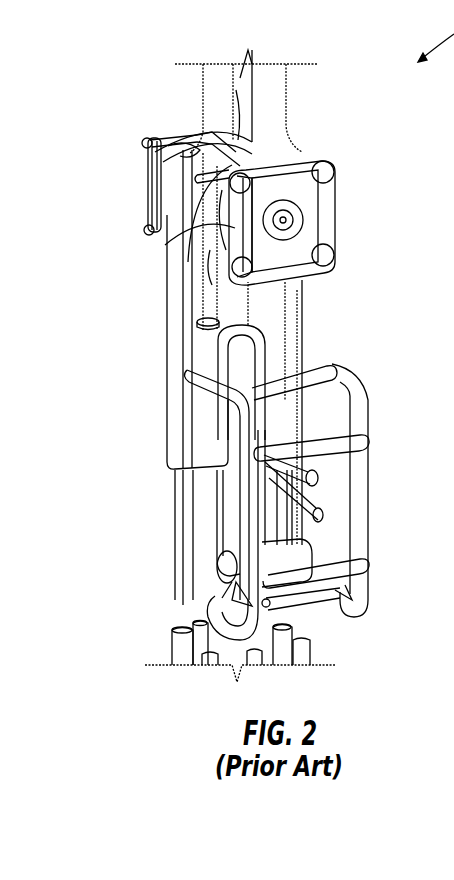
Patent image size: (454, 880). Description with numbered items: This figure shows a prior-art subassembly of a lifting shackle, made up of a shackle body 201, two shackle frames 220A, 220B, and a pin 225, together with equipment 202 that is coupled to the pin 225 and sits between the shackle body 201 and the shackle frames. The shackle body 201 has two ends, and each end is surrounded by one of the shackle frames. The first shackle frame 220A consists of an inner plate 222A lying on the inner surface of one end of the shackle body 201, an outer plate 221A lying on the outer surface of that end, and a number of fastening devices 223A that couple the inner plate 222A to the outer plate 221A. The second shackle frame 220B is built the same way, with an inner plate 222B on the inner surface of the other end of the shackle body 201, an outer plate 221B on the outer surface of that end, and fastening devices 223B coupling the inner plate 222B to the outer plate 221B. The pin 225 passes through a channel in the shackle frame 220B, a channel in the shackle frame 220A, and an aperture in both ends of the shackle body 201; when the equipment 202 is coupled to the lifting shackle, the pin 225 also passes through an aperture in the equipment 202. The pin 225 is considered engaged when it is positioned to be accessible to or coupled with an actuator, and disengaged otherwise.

The shackle body 201 is at (291, 92).
The equipment 202 is at (178, 315).
The shackle frame 220A is at (140, 139).
The shackle frame 220B is at (318, 154).
The outer plate 221A is at (148, 176).
The outer plate 221B is at (240, 227).
The inner plate 222A is at (176, 141).
The inner plate 222B is at (207, 186).
The fastening devices 223A is at (158, 138).
The fastening devices 223B is at (213, 260).
The pin 225 is at (285, 220).